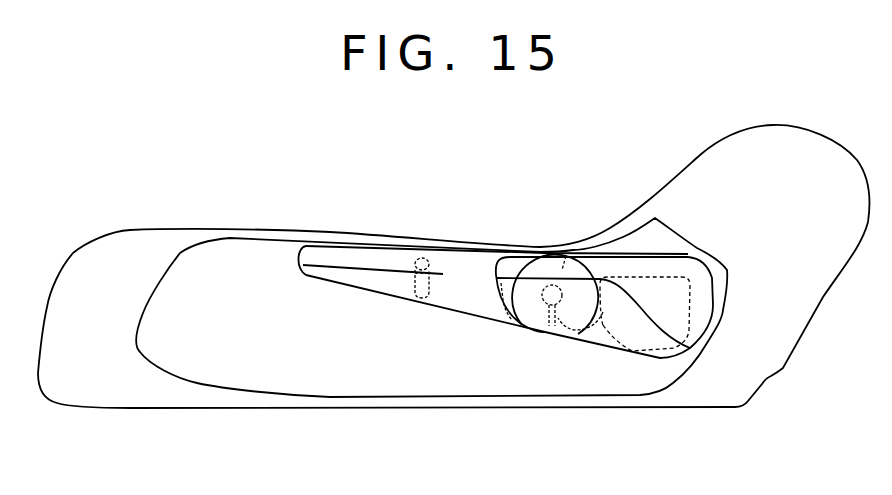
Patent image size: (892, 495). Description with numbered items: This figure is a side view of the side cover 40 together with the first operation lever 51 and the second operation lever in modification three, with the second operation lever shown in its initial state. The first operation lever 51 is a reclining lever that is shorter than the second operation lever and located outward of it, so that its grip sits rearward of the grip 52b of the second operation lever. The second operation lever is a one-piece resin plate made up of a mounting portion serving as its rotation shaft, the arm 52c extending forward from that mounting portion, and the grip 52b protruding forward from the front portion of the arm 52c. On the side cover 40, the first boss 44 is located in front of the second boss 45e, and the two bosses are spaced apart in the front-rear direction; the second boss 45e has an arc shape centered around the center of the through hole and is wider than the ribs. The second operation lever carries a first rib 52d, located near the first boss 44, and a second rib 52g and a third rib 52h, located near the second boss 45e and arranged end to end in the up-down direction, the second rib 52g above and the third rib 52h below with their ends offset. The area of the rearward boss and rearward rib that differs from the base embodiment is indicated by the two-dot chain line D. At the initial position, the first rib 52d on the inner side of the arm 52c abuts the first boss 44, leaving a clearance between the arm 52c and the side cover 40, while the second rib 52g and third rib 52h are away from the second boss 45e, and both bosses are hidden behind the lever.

The side cover 40 is at (215, 255).
The grip 52b is at (358, 257).
The arm 52c is at (383, 282).
The first boss 44 is at (413, 267).
The first rib 52d is at (428, 257).
The second boss 45e is at (548, 283).
The first operation lever 51 is at (642, 292).
The third rib 52h is at (543, 333).
The second rib 52g is at (565, 255).
The two-dot chain line D is at (553, 240).